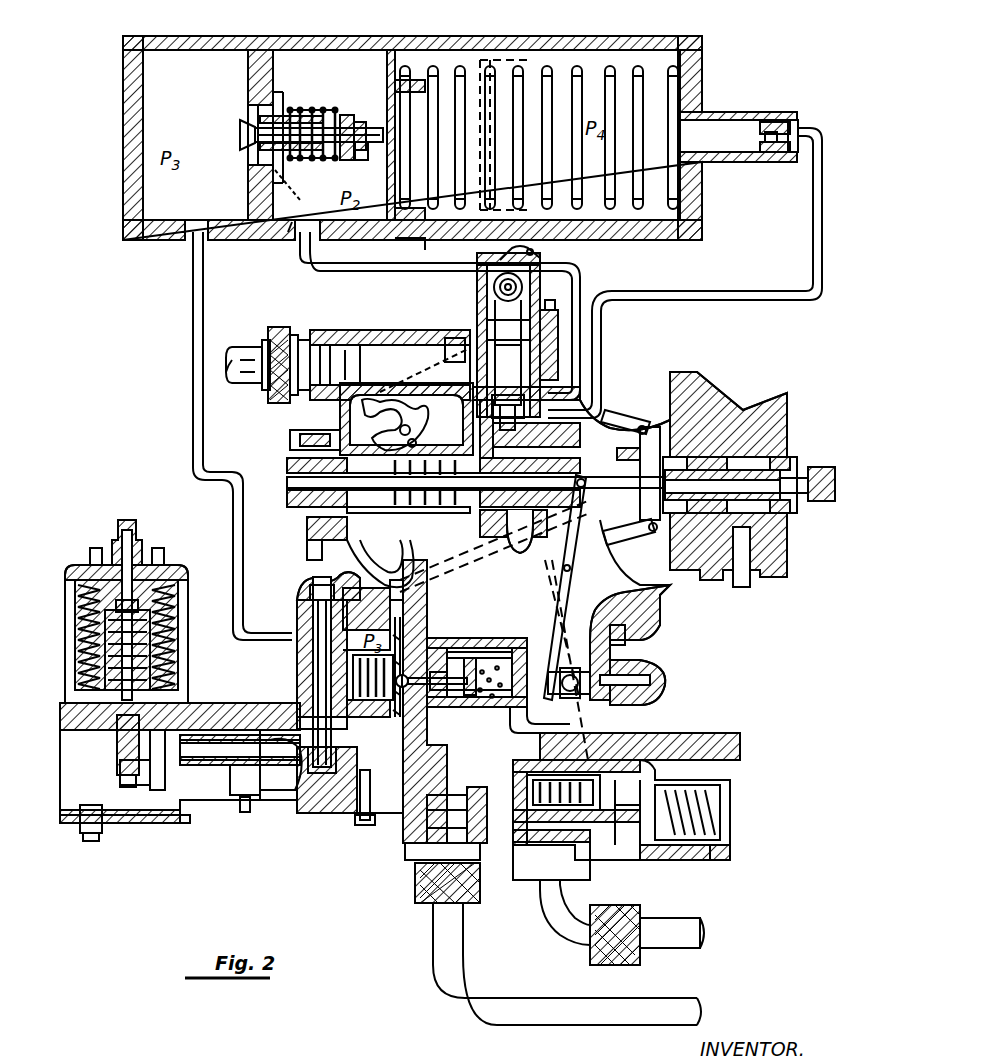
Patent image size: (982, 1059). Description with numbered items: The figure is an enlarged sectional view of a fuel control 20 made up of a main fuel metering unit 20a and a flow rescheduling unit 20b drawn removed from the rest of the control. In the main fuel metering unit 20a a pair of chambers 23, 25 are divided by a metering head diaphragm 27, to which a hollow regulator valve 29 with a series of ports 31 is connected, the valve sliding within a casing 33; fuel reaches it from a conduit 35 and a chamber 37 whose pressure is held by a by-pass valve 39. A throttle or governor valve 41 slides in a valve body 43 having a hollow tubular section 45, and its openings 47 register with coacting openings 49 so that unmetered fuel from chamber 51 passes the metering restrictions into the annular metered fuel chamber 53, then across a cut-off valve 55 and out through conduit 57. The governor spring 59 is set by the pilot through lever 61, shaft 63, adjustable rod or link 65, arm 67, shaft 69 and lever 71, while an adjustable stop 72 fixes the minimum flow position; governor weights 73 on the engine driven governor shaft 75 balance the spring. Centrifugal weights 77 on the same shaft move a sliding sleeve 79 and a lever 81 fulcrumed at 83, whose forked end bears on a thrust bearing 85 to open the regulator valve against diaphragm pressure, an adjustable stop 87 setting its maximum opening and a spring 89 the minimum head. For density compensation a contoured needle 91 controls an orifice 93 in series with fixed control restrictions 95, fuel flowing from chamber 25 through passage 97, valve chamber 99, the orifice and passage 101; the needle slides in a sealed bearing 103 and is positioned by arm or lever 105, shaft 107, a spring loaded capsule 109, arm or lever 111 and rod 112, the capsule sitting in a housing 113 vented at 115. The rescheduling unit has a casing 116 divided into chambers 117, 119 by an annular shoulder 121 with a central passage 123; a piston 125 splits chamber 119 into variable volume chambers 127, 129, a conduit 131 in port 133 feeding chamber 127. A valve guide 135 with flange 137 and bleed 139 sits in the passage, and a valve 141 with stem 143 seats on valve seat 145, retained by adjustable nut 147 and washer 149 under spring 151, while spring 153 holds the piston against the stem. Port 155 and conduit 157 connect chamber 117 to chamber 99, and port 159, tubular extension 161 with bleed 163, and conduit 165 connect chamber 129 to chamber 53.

The fuel control 20 is at (145, 424).
The main fuel metering unit 20a is at (665, 605).
The flow rescheduling unit 20b is at (665, 230).
The chamber 23 is at (425, 743).
The chamber 25 is at (392, 733).
The metering head diaphragm 27 is at (395, 627).
The regulator valve 29 is at (530, 694).
The ports 31 is at (475, 698).
The casing 33 is at (465, 715).
The conduit 35 is at (498, 1005).
The chamber 37 is at (515, 781).
The by-pass valve 39 is at (520, 848).
The throttle or governor valve 41 is at (470, 515).
The valve body 43 is at (545, 432).
The hollow tubular section 45 is at (430, 512).
The openings 47 is at (432, 458).
The openings 49 is at (525, 535).
The chamber 51 is at (490, 587).
The annular metered fuel chamber 53 is at (505, 420).
The cut-off valve 55 is at (548, 378).
The conduit 57 is at (228, 345).
The governor spring 59 is at (378, 536).
The lever 61 is at (545, 255).
The shaft 63 is at (525, 287).
The adjustable rod or link 65 is at (405, 338).
The arm 67 is at (335, 412).
The shaft 69 is at (405, 425).
The lever 71 is at (292, 450).
The adjustable stop 72 is at (295, 495).
The governor weights 73 is at (635, 540).
The governor shaft 75 is at (800, 470).
The centrifugal weights 77 is at (615, 425).
The sliding sleeve 79 is at (620, 447).
The lever 81 is at (583, 550).
The fulcrum 83 is at (568, 575).
The thrust bearing 85 is at (585, 700).
The adjustable stop 87 is at (662, 692).
The spring 89 is at (330, 715).
The contoured needle 91 is at (295, 690).
The orifice 93 is at (305, 580).
The fixed control restrictions 95 is at (415, 640).
The passage 97 is at (395, 590).
The valve chamber 99 is at (300, 615).
The passage 101 is at (305, 580).
The sealed bearing 103 is at (300, 655).
The arm or lever 105 is at (340, 800).
The shaft 107 is at (265, 790).
The density responsive spring loaded capsule 109 is at (170, 580).
The arm or lever 111 is at (142, 790).
The rod 112 is at (122, 722).
The housing 113 is at (70, 580).
The vent 115 is at (185, 620).
The casing 116 is at (310, 42).
The chamber 117 is at (178, 70).
The chamber 119 is at (355, 60).
The annular shoulder 121 is at (282, 45).
The central passage 123 is at (255, 160).
The piston 125 is at (420, 45).
The variable volume chamber 127 is at (290, 255).
The variable volume chamber 129 is at (612, 65).
The conduit 131 is at (372, 273).
The port 133 is at (312, 270).
The valve guide 135 is at (305, 160).
The flange 137 is at (262, 235).
The bleed 139 is at (290, 110).
The valve 141 is at (238, 128).
The valve stem 143 is at (368, 148).
The valve seat 145 is at (262, 118).
The adjustable nut 147 is at (362, 118).
The spring retaining washer 149 is at (345, 112).
The spring 151 is at (280, 222).
The spring 153 is at (475, 55).
The port 155 is at (190, 240).
The conduit 157 is at (193, 343).
The port 159 is at (705, 112).
The tubular extension 161 is at (760, 112).
The bleed 163 is at (762, 145).
The conduit 165 is at (800, 298).